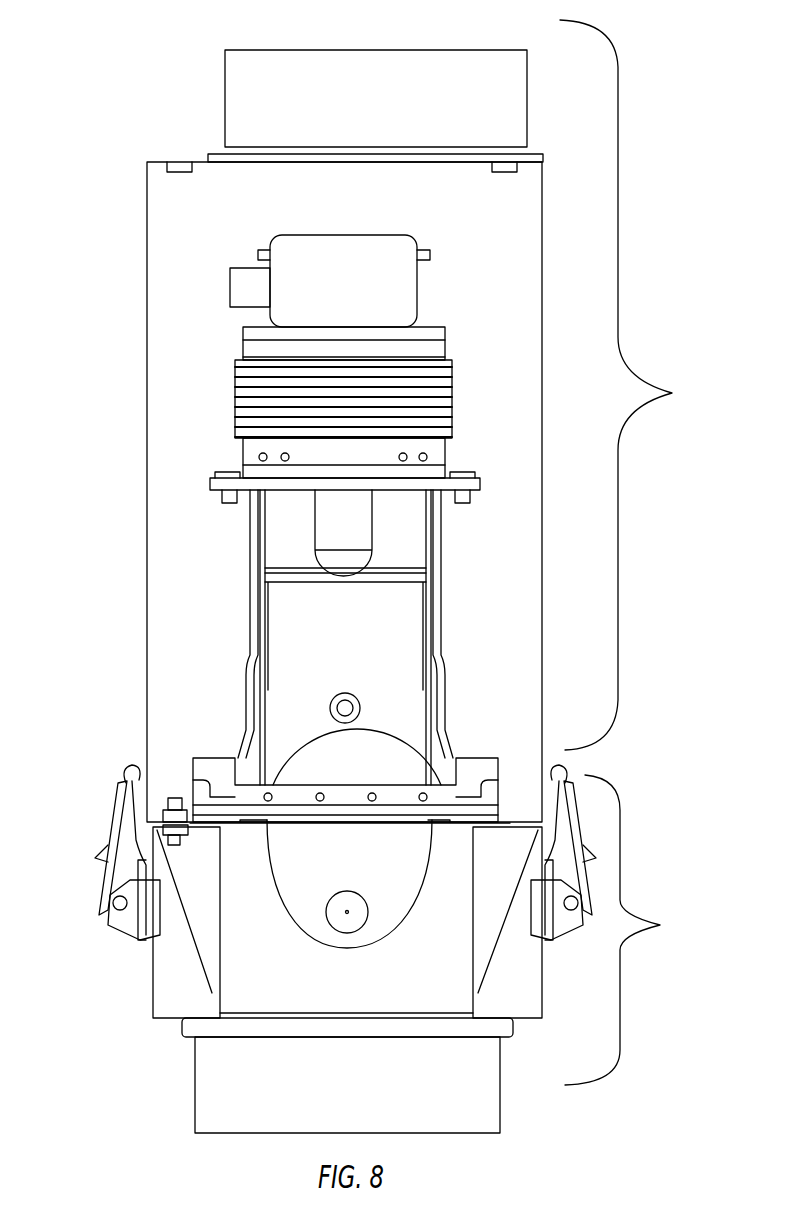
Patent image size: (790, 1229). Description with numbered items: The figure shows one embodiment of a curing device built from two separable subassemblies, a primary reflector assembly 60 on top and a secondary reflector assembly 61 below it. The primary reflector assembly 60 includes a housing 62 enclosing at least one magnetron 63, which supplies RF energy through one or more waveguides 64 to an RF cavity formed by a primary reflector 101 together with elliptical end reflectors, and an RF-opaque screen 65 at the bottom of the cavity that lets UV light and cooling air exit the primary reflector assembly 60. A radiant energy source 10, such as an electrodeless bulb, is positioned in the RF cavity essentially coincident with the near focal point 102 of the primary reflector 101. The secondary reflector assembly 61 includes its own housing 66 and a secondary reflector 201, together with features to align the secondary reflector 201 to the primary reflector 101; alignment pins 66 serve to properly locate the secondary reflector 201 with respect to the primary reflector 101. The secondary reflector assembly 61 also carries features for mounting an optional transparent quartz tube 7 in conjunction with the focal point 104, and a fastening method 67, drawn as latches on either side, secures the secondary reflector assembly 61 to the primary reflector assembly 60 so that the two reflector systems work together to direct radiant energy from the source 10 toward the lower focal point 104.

The primary reflector assembly 60 is at (637, 385).
The secondary reflector assembly 61 is at (428, 954).
The housing 62 is at (147, 215).
The magnetron 63 is at (243, 343).
The waveguide 64 is at (248, 547).
The RF-opaque screen 65 is at (238, 757).
The housing / alignment pins 66 is at (170, 797).
The fastening method 67 is at (126, 773).
The radiant energy source 10 is at (345, 708).
The primary reflector 101 is at (247, 658).
The near focal point 102 is at (283, 690).
The secondary reflector 201 is at (267, 855).
The transparent quartz tube 7 is at (323, 900).
The focal point 104 is at (348, 912).